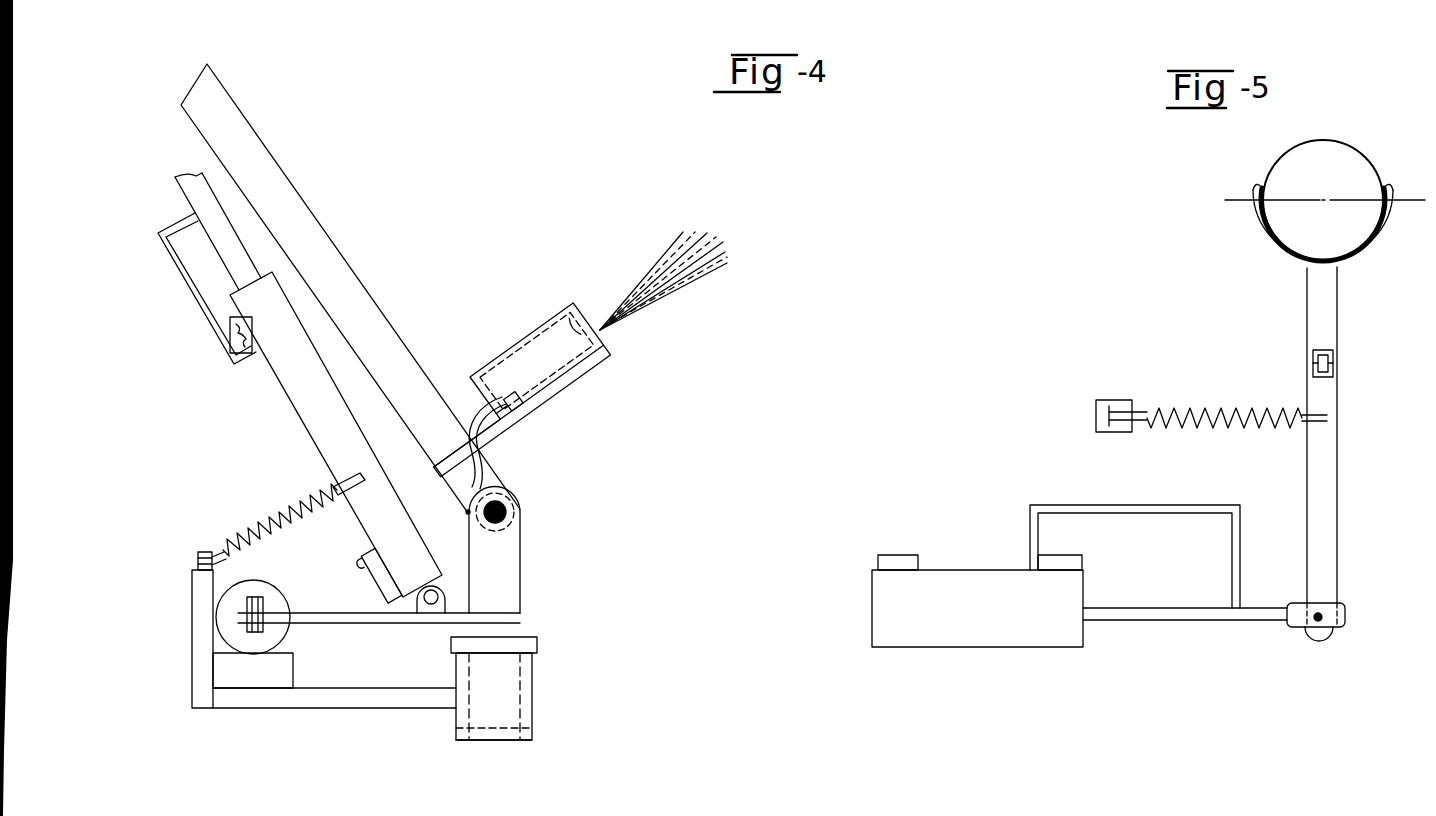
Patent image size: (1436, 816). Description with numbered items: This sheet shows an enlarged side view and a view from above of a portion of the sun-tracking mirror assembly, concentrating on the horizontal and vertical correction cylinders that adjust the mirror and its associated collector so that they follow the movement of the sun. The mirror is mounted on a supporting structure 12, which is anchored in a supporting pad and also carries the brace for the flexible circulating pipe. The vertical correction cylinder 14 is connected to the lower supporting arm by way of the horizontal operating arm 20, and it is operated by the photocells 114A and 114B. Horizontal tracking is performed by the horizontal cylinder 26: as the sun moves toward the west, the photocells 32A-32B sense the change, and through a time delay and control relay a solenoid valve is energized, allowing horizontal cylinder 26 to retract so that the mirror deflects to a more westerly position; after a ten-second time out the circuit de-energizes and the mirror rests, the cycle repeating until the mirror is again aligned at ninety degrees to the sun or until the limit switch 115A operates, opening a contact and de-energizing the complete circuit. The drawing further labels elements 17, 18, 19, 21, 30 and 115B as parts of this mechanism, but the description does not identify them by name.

In FIG. 4, the supporting structure 12 is at (357, 277).
In FIG. 5, the supporting structure 12 is at (1352, 153).
In FIG. 4, the vertical correction cylinder 14 is at (318, 453).
In FIG. 5, the return spring 17 is at (1230, 410).
In FIG. 4, the support post 18 is at (532, 693).
In FIG. 4, the collar 19 is at (537, 646).
In FIG. 5, the horizontal operating arm 20 is at (1328, 476).
In FIG. 4, the base 21 is at (532, 733).
In FIG. 5, the horizontal cylinder 26 is at (872, 635).
In FIG. 4, the spring 30 is at (218, 545).
In FIG. 4, the photocells 32A-32B is at (530, 373).
In FIG. 4, the photocell 114A is at (230, 338).
In FIG. 4, the photocell 114B is at (372, 584).
In FIG. 5, the limit switch 115A is at (934, 535).
In FIG. 5, the limit switch 115B is at (1052, 558).